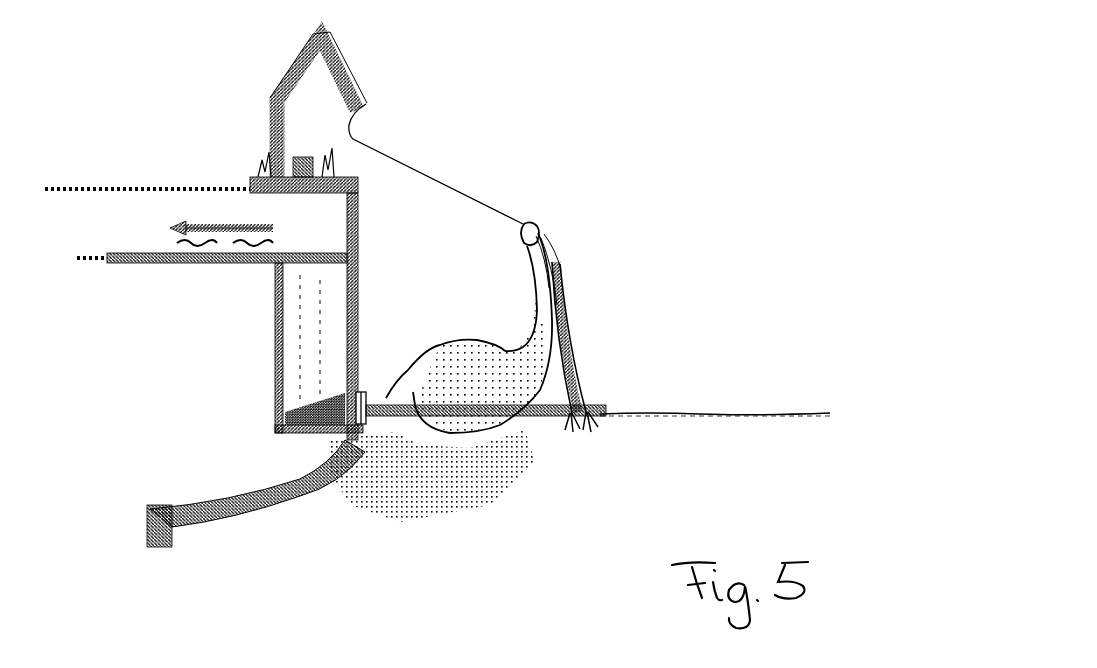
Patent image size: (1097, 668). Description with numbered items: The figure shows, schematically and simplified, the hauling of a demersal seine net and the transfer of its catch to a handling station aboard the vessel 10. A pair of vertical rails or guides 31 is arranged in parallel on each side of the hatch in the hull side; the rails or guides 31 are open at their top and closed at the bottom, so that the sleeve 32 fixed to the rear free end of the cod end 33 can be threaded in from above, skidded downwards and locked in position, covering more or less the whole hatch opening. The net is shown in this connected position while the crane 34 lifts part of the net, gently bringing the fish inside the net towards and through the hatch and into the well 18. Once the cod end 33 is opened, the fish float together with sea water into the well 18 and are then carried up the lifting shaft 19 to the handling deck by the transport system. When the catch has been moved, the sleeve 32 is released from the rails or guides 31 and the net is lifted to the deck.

The longline fishing vessel 10 is at (283, 500).
The well 18 is at (272, 348).
The lifting shaft 19 is at (294, 307).
The vertical rails or guides 31 is at (362, 325).
The sleeve at end of cod end 32 is at (368, 410).
The cod end 33 is at (415, 400).
The crane, winch, triplex 34 is at (356, 84).